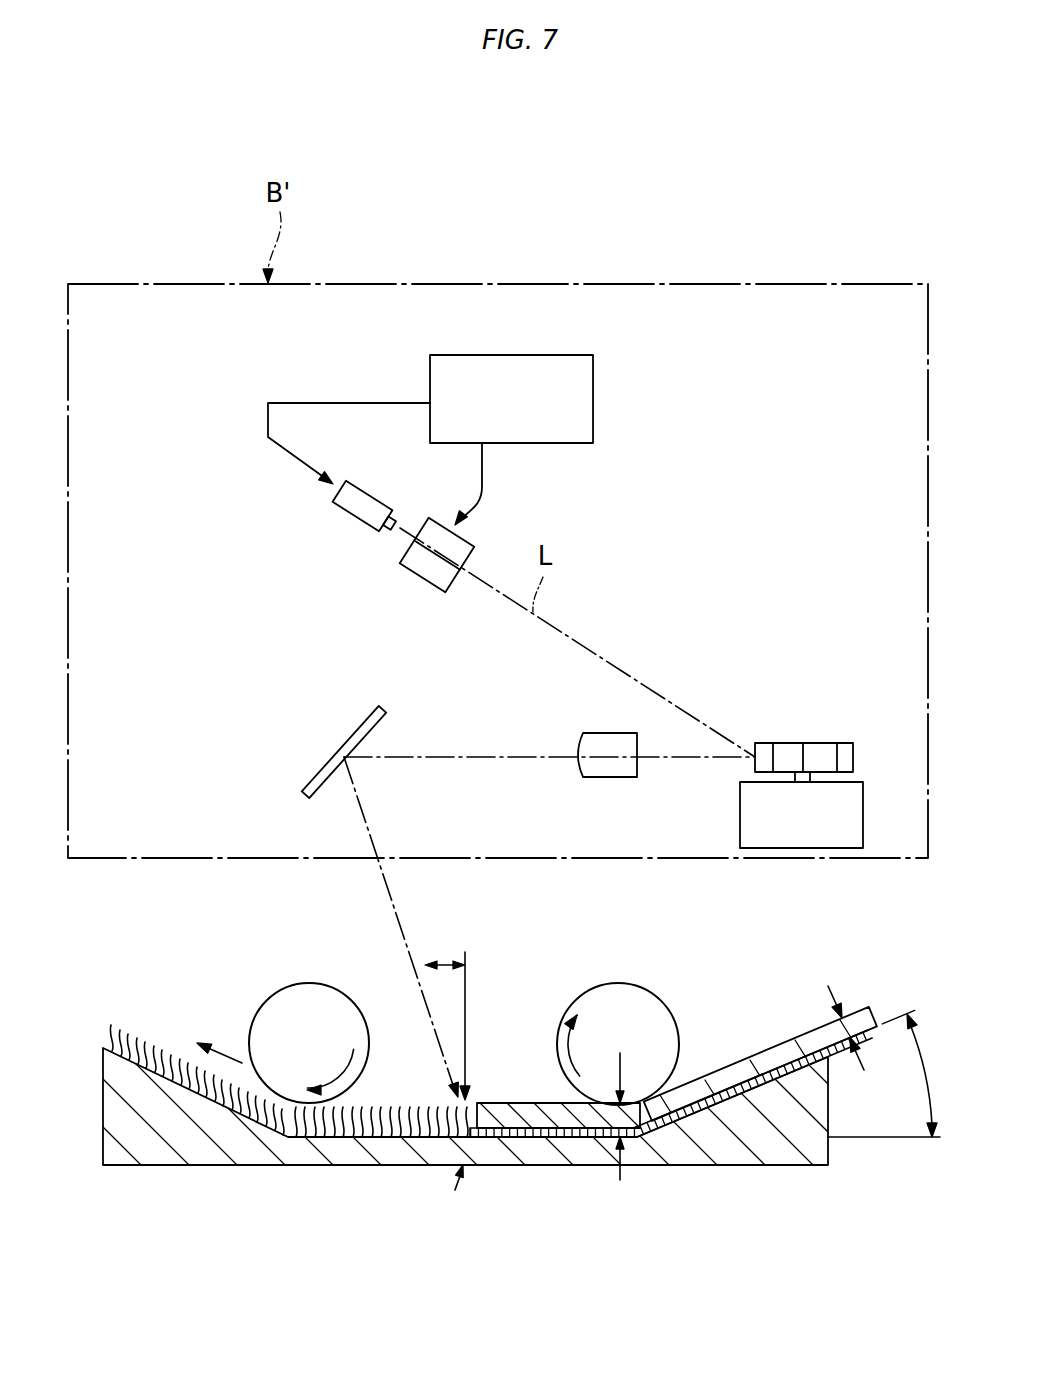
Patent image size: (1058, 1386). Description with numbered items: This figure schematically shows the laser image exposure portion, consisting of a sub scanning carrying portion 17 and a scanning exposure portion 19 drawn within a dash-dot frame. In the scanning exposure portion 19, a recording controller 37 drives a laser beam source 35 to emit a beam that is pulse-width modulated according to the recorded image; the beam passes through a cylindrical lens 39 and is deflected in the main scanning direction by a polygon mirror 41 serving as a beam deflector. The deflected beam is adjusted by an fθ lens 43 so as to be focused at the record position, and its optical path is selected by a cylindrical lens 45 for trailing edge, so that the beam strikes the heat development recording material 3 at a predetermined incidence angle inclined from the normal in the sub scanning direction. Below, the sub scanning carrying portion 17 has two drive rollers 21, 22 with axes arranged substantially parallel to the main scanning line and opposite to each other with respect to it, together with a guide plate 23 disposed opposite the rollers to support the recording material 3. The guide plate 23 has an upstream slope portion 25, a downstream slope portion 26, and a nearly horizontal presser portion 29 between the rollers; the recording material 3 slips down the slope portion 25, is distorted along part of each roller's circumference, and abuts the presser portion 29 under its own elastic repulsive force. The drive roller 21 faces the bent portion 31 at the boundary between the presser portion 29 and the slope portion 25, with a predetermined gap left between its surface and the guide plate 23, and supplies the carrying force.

The scanning exposure portion 19 is at (557, 270).
The recording controller 37 is at (430, 375).
The laser beam source 35 is at (353, 515).
The cylindrical lens 39 is at (425, 577).
The cylindrical lens for trailing edge 45 is at (353, 727).
The fθ lens 43 is at (618, 777).
The polygon mirror 41 is at (827, 747).
The sub scanning carrying portion 17 is at (225, 955).
The guide plate 23 is at (292, 1180).
The slope portion 26 is at (155, 1045).
The drive roller 22 is at (335, 985).
The drive roller 21 is at (613, 985).
The presser portion 29 is at (517, 1090).
The heat development recording material 3 is at (503, 1110).
The slope portion 25 is at (803, 1027).
The bent portion 31 is at (639, 1115).